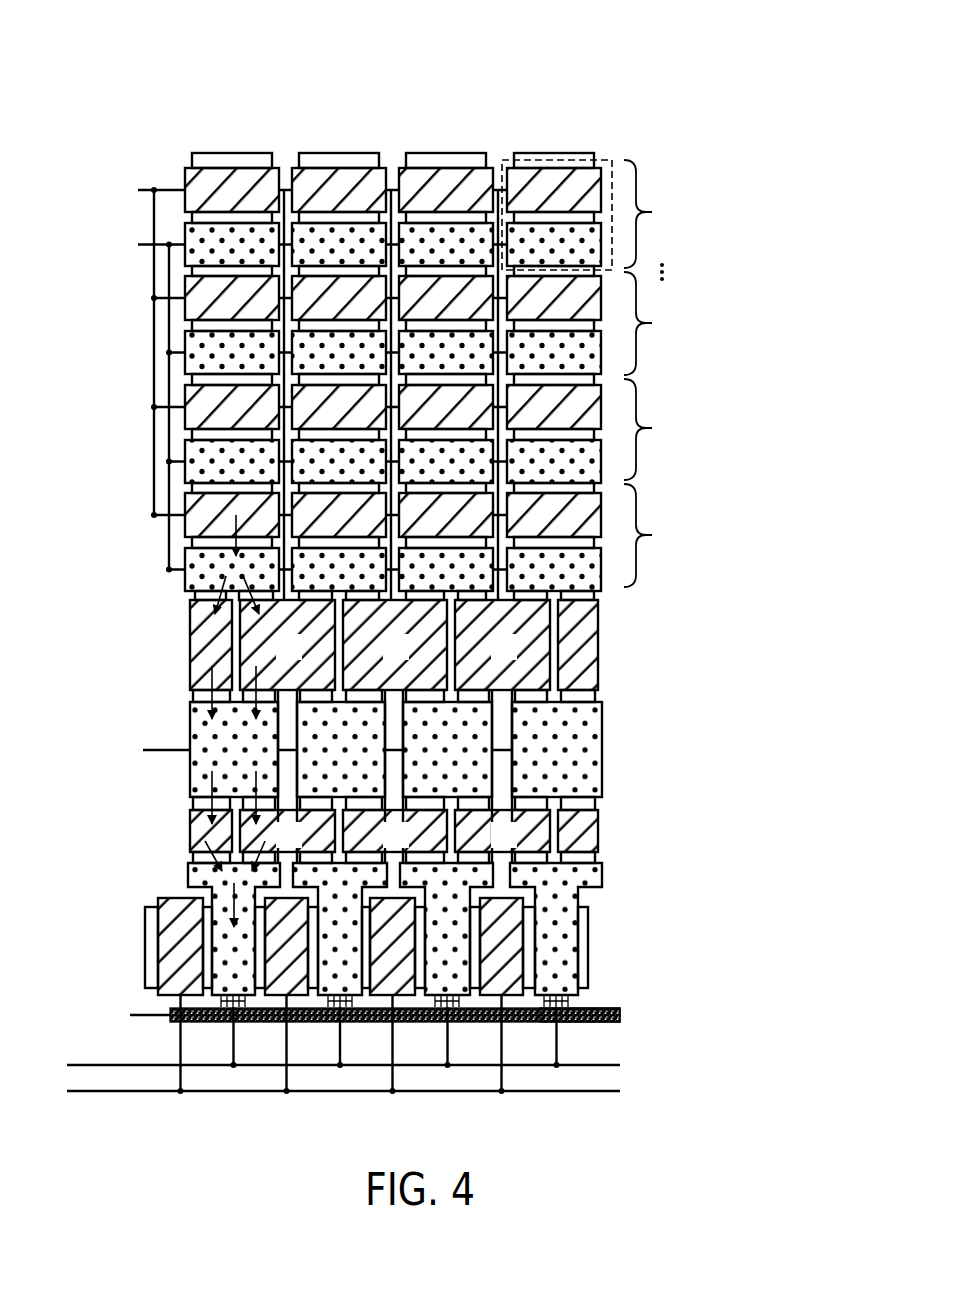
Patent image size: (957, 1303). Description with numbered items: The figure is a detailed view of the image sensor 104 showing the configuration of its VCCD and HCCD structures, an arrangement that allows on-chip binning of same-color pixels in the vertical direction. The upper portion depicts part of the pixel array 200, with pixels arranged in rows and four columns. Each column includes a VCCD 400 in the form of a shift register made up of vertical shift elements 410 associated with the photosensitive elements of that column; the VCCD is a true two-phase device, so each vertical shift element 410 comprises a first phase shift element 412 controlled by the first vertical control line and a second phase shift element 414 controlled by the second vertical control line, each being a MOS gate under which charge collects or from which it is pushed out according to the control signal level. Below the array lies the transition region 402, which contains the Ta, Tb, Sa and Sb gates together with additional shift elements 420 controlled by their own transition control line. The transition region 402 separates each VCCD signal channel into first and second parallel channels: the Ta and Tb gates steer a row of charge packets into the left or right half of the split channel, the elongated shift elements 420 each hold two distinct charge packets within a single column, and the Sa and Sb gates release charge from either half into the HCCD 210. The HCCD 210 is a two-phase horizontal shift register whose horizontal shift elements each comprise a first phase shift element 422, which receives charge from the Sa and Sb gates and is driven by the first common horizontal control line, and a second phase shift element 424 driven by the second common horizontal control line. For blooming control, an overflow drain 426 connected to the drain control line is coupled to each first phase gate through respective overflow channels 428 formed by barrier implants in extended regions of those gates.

The image sensor 104 is at (757, 123).
The pixel array 200 is at (94, 133).
The VCCD 400 is at (287, 117).
The vertical shift element 410 is at (503, 160).
The first phase shift element 412 is at (595, 240).
The second phase shift element 414 is at (595, 185).
The transition region 402 is at (628, 600).
The shift element 420 is at (195, 730).
The HCCD 210 is at (628, 870).
The first phase shift element 422 is at (218, 988).
The second phase shift element 424 is at (168, 948).
The overflow drain 426 is at (300, 1022).
The overflow channel 428 is at (563, 1020).